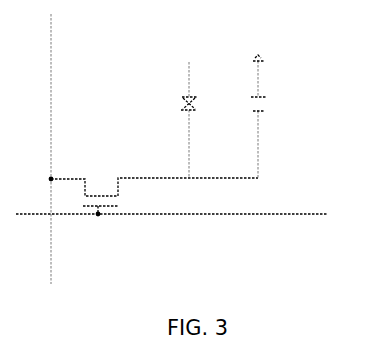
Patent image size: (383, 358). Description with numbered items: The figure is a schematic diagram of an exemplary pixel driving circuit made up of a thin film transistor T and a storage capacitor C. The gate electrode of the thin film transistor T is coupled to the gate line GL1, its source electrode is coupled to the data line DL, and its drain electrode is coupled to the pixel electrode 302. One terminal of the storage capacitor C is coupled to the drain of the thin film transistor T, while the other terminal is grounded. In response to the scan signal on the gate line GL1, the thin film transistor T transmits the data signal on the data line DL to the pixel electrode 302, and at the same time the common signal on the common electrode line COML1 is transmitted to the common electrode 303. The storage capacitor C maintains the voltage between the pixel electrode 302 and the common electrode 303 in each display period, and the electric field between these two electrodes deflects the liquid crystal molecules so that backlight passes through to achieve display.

The pixel electrode 302 is at (181, 110).
The common electrode 303 is at (182, 97).
The data line DL is at (38, 149).
The gate line GL1 is at (186, 215).
The common electrode line COML1 is at (188, 112).
The thin film transistor T is at (153, 193).
The storage capacitor C is at (265, 116).